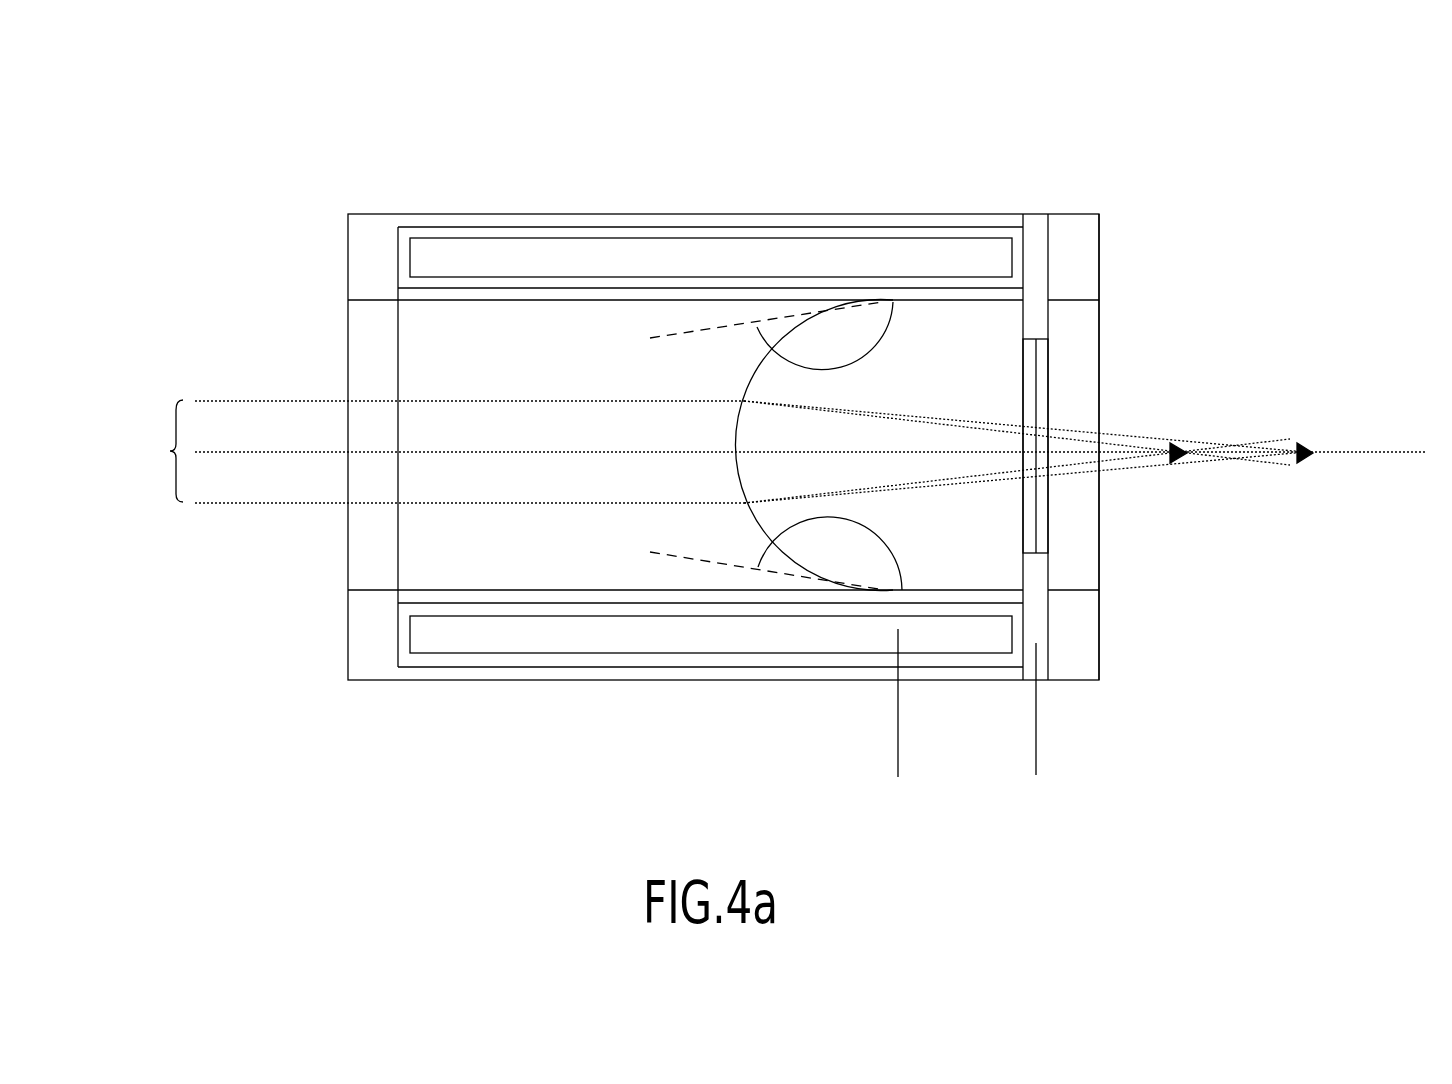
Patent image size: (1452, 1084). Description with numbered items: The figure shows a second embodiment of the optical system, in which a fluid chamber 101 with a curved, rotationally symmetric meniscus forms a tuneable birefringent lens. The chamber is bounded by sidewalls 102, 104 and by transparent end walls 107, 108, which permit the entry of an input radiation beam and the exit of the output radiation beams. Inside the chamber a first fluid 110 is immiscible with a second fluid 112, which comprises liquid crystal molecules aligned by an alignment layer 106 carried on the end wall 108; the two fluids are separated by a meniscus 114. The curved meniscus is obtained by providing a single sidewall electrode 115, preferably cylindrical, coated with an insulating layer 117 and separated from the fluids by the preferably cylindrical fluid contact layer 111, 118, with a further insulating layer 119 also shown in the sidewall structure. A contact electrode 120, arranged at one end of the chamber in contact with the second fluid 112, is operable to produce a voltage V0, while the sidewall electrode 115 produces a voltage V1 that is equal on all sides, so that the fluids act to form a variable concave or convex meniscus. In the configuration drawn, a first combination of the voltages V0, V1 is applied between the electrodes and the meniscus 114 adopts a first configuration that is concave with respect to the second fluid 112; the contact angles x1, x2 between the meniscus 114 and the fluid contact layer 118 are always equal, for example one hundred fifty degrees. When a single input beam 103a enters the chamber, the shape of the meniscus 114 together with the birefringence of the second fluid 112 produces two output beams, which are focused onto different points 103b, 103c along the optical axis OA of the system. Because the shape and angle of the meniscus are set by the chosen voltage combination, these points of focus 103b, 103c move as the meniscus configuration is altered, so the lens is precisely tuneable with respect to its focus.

The fluid chamber 101 is at (284, 193).
The sidewall 102 is at (410, 302).
The input beam 103a is at (173, 451).
The first point of focus 103b is at (1180, 460).
The second point of focus 103c is at (1313, 457).
The sidewall 104 is at (723, 592).
The alignment layer 106 is at (1035, 503).
The end wall 107 is at (347, 538).
The end wall 108 is at (1100, 290).
The first fluid 110 is at (472, 528).
The fluid contact layer 111 is at (529, 293).
The second fluid 112 is at (937, 575).
The meniscus 114 is at (746, 383).
The sidewall electrode 115 is at (543, 632).
The insulating layer 117 is at (455, 608).
The fluid contact layer 118 is at (646, 597).
The insulating layer 119 is at (455, 280).
The contact electrode 120 is at (1036, 228).
The sidewall electrode voltage V1 is at (890, 727).
The contact electrode voltage V0 is at (1027, 734).
The optical axis OA is at (1365, 452).
The contact angle x1 is at (825, 336).
The contact angle x2 is at (830, 553).